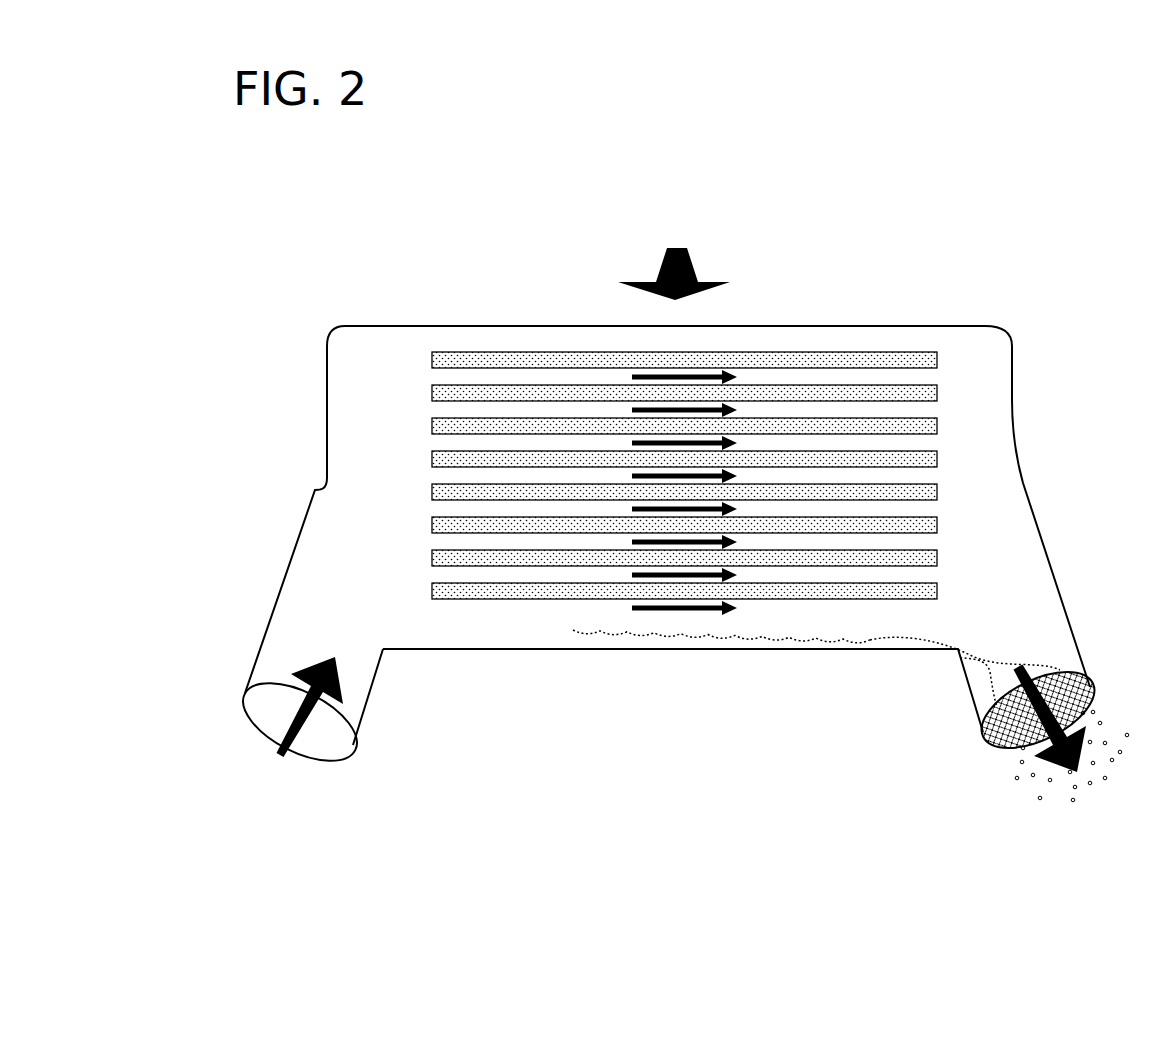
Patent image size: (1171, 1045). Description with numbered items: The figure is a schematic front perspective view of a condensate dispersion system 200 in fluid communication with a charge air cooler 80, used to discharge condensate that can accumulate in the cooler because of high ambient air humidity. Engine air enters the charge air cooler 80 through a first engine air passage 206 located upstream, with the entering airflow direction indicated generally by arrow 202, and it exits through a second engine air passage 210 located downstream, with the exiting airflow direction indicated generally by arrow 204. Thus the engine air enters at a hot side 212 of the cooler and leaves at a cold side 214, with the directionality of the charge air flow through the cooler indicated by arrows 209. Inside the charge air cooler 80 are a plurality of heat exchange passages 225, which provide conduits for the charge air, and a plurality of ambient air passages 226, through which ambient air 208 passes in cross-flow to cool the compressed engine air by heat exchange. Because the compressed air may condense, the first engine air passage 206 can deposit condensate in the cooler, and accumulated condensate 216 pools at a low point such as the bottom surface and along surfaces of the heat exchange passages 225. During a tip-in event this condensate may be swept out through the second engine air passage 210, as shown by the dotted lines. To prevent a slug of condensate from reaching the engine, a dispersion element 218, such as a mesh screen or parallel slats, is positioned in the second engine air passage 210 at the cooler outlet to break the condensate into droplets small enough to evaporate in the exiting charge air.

The condensate dispersion system 200 is at (918, 112).
The charge air cooler 80 is at (530, 326).
The arrow indicating direction of engine airflow entering charge air cooler 202 is at (278, 752).
The arrow indicating direction of engine airflow exiting charge air cooler 204 is at (1020, 670).
The first engine air passage 206 is at (306, 644).
The ambient air 208 is at (630, 283).
The arrows indicating directionality of charge air flow 209 is at (614, 496).
The second engine air passage 210 is at (998, 636).
The hot side 212 is at (368, 308).
The cold side 214 is at (960, 308).
The accumulated condensate 216 is at (873, 640).
The dispersion element 218 is at (997, 740).
The heat exchange passages 225 is at (420, 578).
The ambient air passages 226 is at (432, 460).